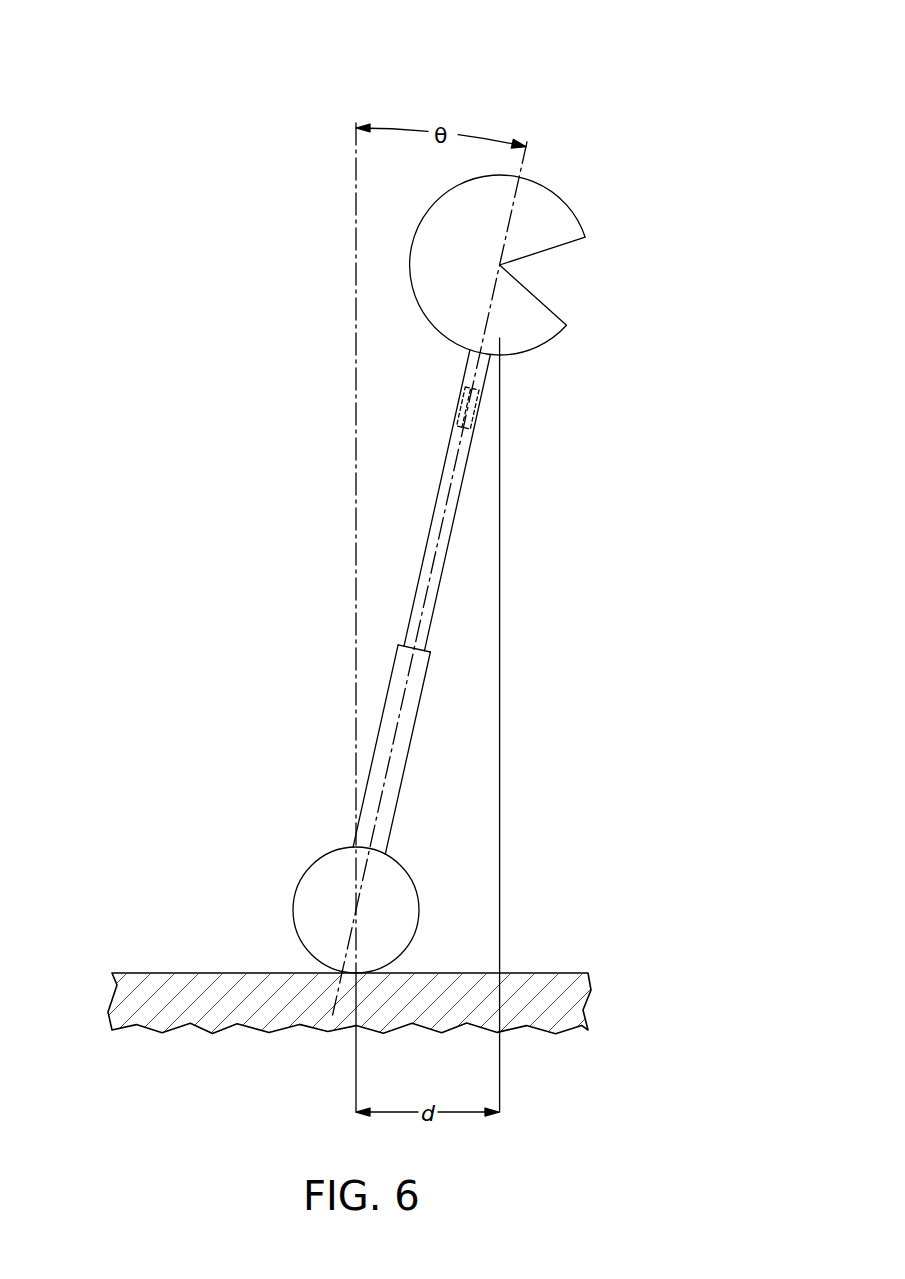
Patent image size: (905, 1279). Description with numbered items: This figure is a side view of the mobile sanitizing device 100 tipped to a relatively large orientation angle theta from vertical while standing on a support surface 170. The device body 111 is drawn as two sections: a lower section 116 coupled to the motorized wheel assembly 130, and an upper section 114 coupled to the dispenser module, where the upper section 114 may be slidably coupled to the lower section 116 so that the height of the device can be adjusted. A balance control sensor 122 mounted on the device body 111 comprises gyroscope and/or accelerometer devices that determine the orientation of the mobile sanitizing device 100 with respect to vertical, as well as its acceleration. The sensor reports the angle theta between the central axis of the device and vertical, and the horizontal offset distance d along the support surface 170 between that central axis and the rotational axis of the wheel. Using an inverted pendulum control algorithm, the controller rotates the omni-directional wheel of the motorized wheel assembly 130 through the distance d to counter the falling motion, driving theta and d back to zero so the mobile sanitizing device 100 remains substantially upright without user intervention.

The mobile sanitizing device 100 is at (315, 504).
The device body 111 is at (471, 602).
The upper section 114 is at (422, 570).
The lower section 116 is at (400, 787).
The balance control sensor 122 is at (457, 412).
The motorized wheel assembly 130 is at (304, 883).
The support surface 170 is at (551, 973).